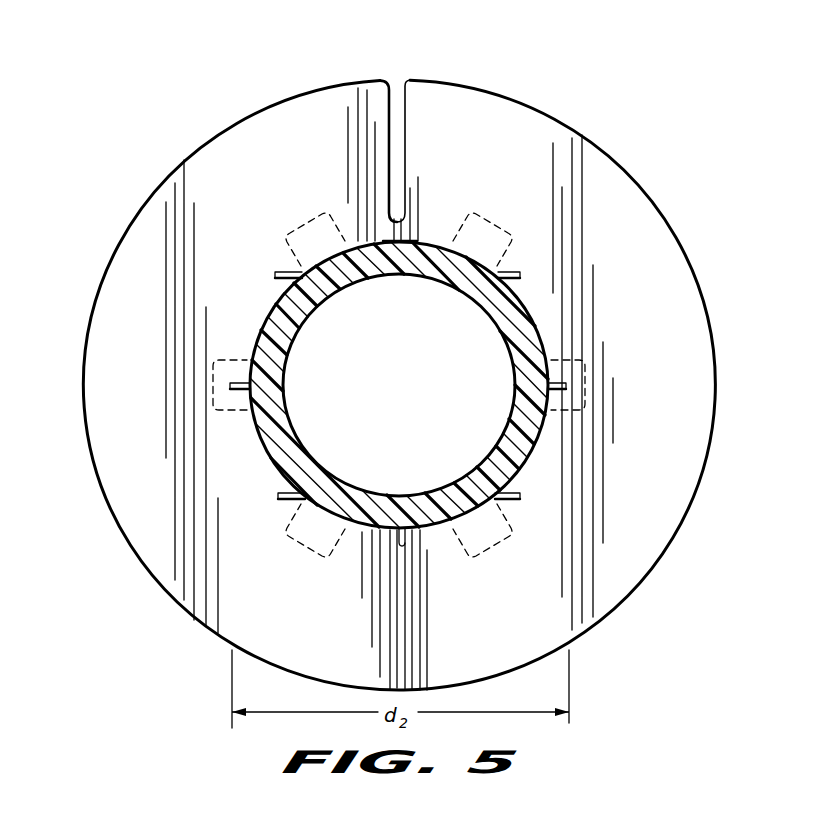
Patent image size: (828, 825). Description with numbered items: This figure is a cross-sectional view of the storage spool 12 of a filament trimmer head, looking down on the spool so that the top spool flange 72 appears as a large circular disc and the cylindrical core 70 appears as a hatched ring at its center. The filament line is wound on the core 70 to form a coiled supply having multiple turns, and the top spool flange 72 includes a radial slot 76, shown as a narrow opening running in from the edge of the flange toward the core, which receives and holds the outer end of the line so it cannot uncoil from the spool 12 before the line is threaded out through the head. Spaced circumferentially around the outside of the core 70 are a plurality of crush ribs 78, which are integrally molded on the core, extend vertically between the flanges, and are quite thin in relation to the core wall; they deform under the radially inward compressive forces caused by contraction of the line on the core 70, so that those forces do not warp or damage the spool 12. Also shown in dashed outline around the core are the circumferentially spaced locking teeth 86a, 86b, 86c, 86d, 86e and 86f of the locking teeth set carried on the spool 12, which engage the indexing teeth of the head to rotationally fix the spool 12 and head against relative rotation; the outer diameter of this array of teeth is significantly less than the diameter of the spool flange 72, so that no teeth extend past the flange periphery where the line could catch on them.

The storage spool 12 is at (203, 115).
The cylindrical core 70 is at (463, 273).
The top spool flange 72 is at (508, 121).
The radial slot 76 is at (418, 96).
The crush ribs 78 is at (404, 233).
The locking tooth 86a is at (473, 558).
The locking tooth 86b is at (588, 360).
The locking tooth 86c is at (471, 214).
The locking tooth 86d is at (318, 214).
The locking tooth 86e is at (215, 360).
The locking tooth 86f is at (312, 546).